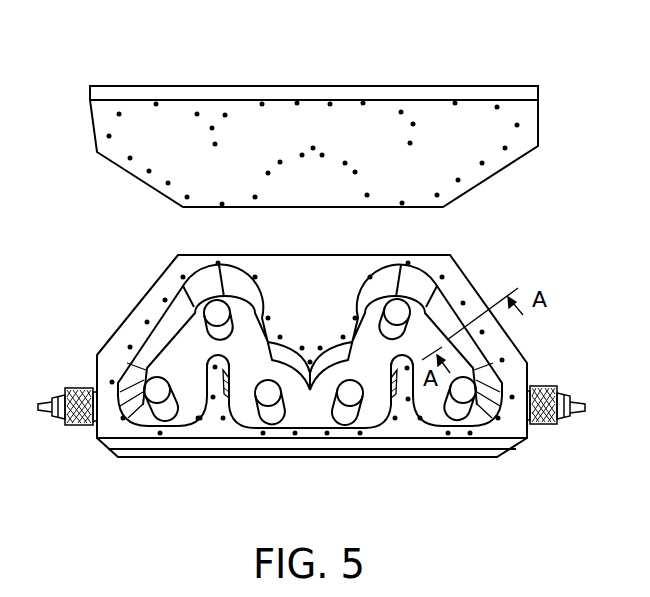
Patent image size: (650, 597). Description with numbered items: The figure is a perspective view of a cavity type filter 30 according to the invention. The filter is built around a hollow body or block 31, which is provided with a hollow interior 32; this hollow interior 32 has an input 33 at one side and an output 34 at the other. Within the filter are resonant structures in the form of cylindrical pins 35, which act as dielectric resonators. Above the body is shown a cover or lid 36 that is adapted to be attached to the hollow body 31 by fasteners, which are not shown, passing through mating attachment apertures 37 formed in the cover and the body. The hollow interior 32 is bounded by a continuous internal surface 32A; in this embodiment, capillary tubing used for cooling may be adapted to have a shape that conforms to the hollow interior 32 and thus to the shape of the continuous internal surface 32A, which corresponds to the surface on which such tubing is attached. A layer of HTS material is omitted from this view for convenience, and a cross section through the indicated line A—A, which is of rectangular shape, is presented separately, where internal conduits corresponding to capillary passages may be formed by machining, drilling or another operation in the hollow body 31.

The cavity type filter 30 is at (213, 473).
The hollow body 31 is at (348, 277).
The hollow interior 32 is at (306, 412).
The continuous internal surface 32A is at (162, 335).
The input 33 is at (53, 410).
The output 34 is at (566, 402).
The cylindrical pins 35 is at (398, 310).
The cover 36 is at (340, 93).
The attachment apertures 37 is at (213, 143).